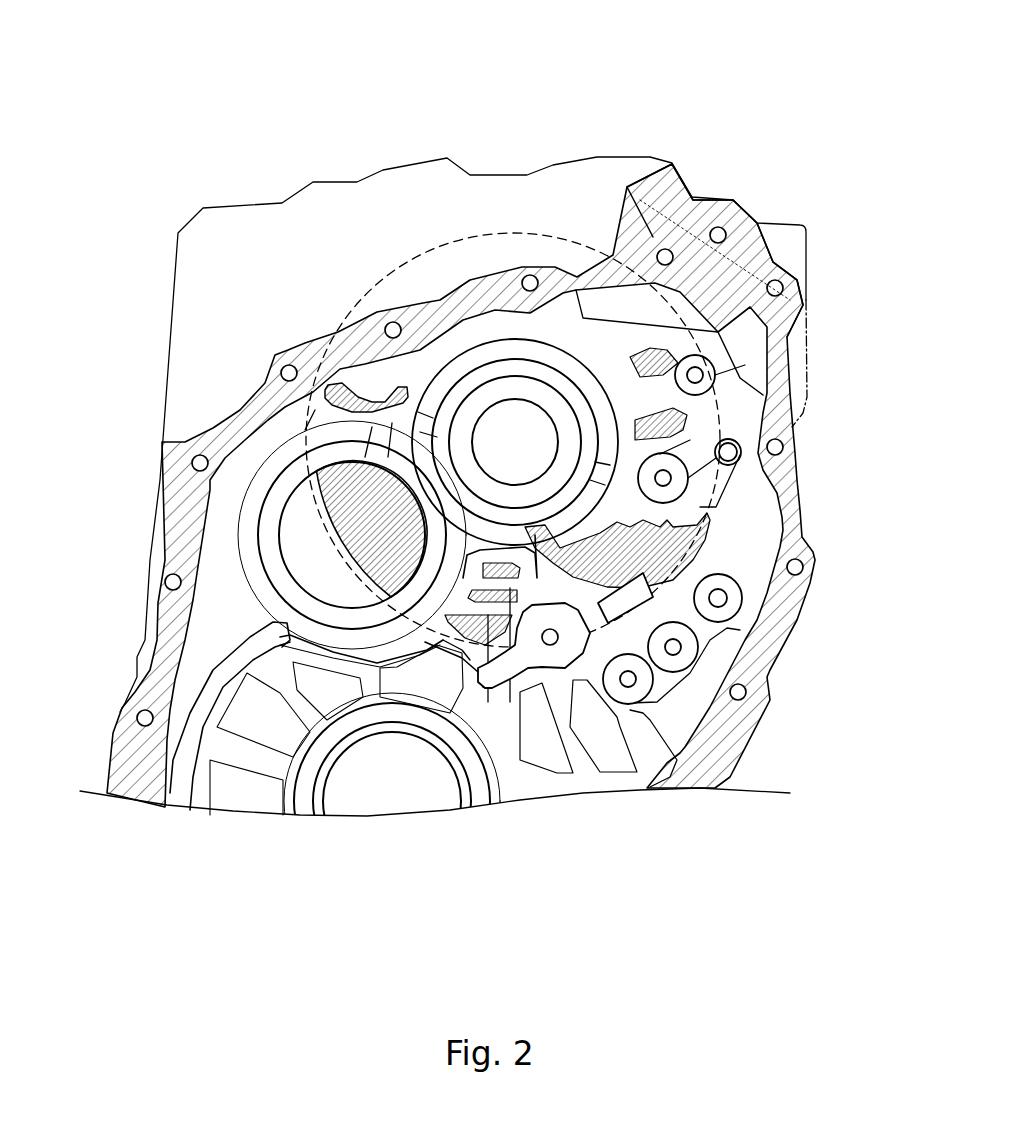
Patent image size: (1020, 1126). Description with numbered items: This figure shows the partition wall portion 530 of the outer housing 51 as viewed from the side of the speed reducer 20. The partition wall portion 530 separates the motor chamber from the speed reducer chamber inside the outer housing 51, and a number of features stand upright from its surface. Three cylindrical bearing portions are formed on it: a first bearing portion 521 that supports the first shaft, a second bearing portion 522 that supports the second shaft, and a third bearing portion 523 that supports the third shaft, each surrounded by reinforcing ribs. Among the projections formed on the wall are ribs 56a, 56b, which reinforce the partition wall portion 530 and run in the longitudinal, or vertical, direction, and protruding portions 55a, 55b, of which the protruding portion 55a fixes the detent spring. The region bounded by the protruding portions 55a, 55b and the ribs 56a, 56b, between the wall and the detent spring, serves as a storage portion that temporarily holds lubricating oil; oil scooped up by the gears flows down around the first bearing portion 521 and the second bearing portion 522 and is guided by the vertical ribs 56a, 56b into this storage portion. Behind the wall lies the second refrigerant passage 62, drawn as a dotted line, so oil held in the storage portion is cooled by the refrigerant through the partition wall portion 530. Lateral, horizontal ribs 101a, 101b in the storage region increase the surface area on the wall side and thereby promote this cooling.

The speed reducer 20 is at (556, 212).
The outer housing 51 is at (727, 198).
The second refrigerant passage 62 is at (340, 557).
The first bearing portion 521 is at (497, 399).
The second bearing portion 522 is at (292, 500).
The third bearing portion 523 is at (323, 815).
The partition wall portion 530 is at (418, 370).
The rib 56a is at (565, 577).
The rib 56b is at (462, 658).
The rib 101a is at (510, 588).
The rib 101b is at (487, 615).
The protruding portion 55a is at (568, 652).
The protruding portion 55b is at (620, 607).